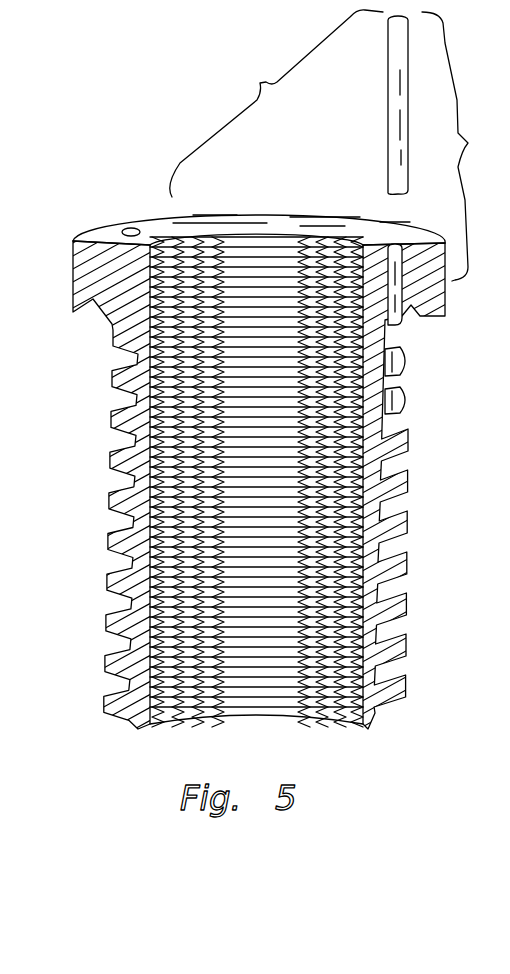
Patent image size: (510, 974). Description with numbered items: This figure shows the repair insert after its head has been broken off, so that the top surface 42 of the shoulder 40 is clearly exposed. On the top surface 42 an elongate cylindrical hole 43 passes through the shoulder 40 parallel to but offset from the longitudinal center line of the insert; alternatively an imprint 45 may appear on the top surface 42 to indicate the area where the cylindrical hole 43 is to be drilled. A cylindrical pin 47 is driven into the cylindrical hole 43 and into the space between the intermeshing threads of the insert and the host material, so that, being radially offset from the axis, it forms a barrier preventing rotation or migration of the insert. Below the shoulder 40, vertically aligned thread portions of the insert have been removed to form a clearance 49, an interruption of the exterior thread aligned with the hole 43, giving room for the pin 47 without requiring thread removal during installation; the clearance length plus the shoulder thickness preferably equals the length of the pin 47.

The shoulder 40 is at (85, 265).
The top surface 42 is at (156, 220).
The imprint 45 is at (127, 228).
The cylindrical hole 43 is at (408, 310).
The cylindrical pin 47 is at (388, 122).
The clearance 49 is at (404, 379).